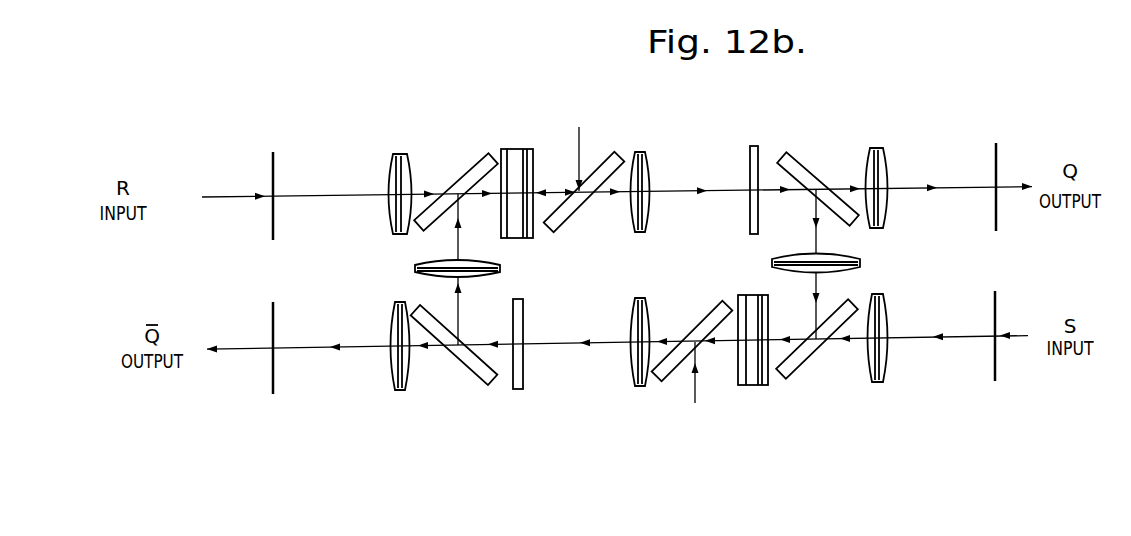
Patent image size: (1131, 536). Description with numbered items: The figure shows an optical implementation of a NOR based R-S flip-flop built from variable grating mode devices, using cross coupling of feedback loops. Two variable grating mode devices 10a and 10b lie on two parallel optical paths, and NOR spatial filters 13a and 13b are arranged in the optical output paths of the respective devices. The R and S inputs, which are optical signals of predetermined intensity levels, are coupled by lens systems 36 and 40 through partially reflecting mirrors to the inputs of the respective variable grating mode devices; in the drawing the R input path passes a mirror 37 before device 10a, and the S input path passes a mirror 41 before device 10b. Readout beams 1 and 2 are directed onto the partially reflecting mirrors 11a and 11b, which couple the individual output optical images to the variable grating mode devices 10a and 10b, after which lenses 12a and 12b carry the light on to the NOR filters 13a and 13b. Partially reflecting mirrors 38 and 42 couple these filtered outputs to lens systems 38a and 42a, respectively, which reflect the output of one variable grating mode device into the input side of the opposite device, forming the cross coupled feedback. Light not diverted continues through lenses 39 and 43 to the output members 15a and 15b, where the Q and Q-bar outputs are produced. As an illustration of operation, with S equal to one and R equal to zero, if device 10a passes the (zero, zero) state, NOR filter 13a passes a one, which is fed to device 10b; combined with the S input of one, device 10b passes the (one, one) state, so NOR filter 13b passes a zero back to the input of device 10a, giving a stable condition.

The lens system 36 is at (393, 156).
The beam splitter mirror 37 is at (490, 157).
The lens system 42a is at (418, 262).
The variable grating mode device 10a is at (518, 149).
The readout 1 beam 1 is at (582, 136).
The partially reflecting mirror 11a is at (618, 154).
The lens 12a is at (646, 153).
The NOR spatial filter 13a is at (752, 147).
The partially reflecting mirror 38 is at (783, 153).
The lens system 38a is at (859, 260).
The lens 39 is at (872, 150).
The output member 15a is at (997, 152).
The output member 15b is at (273, 376).
The lens 43 is at (394, 385).
The partially reflecting mirror 42 is at (489, 384).
The NOR spatial filter 13b is at (521, 389).
The lens 12b is at (632, 300).
The partially reflecting mirror 11b is at (719, 300).
The readout 2 beam 2 is at (703, 399).
The variable grating mode device 10b is at (762, 385).
The beam splitter mirror 41 is at (789, 378).
The lens system 40 is at (880, 296).